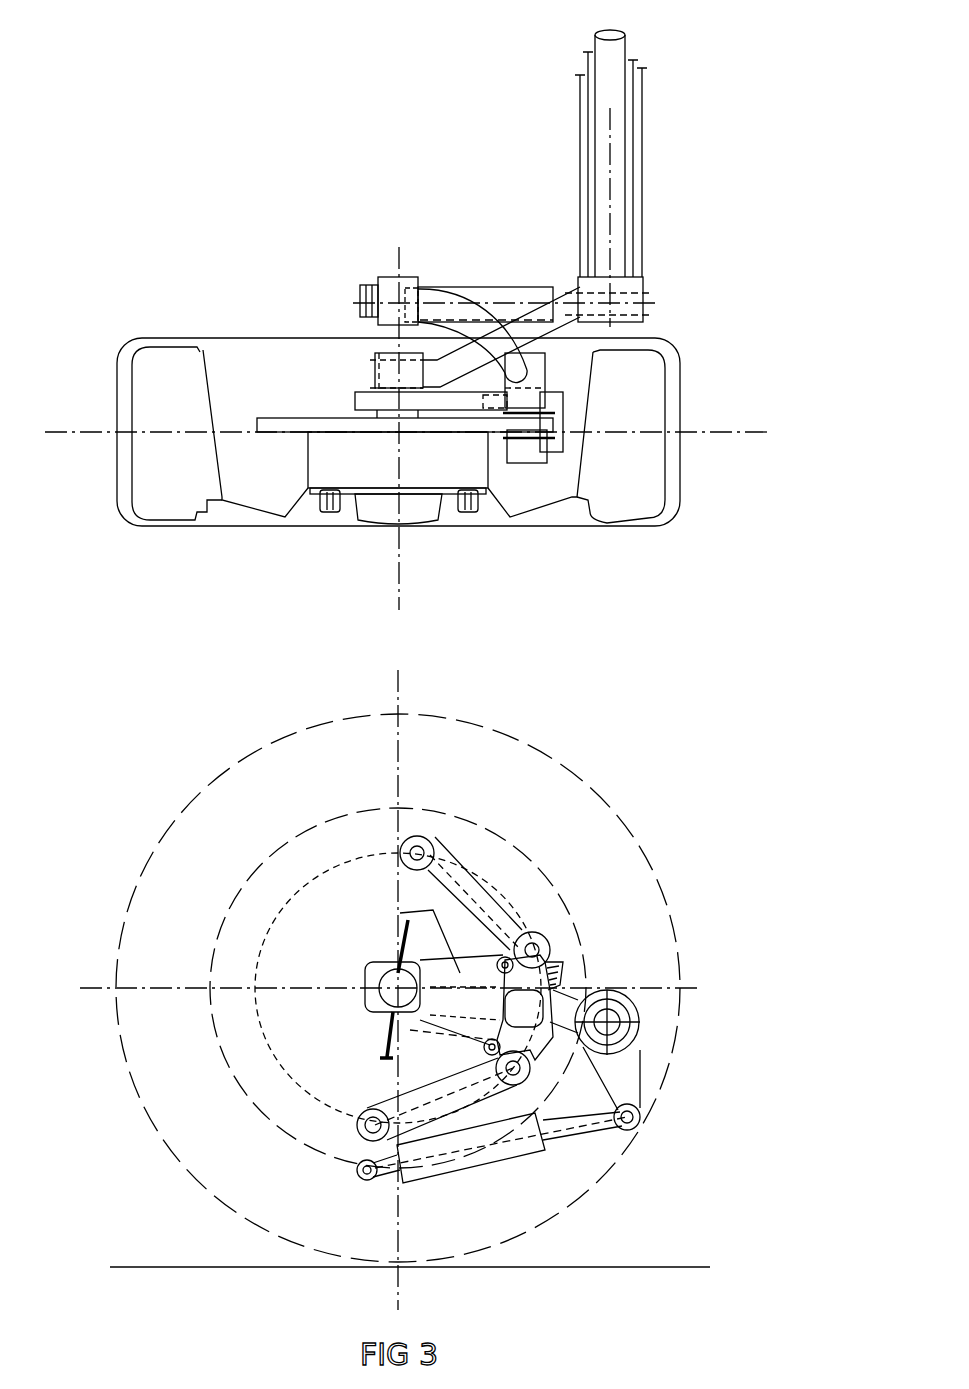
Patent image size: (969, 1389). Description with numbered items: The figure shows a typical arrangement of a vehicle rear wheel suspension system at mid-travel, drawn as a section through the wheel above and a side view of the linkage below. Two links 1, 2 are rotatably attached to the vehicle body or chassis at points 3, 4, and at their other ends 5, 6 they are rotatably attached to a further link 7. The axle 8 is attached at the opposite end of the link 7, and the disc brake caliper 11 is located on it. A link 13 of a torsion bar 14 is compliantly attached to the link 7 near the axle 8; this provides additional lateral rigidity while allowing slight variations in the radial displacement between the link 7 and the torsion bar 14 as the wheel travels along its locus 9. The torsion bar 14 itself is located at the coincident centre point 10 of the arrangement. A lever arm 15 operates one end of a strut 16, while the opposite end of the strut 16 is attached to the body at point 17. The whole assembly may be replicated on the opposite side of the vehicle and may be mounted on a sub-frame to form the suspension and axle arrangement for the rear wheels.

The link 1 is at (450, 287).
The link 2 is at (430, 1088).
The attachment point 3 is at (407, 840).
The attachment point 4 is at (358, 1125).
The attachment end 5 is at (547, 940).
The attachment end 6 is at (530, 1080).
The link 7 is at (360, 393).
The axle 8 is at (377, 983).
The locus 9 is at (410, 1035).
The coincident centre point 10 is at (573, 1020).
The disc brake caliper 11 is at (557, 452).
The link 13 is at (533, 330).
The torsion bar 14 is at (595, 42).
The lever arm 15 is at (640, 1072).
The strut 16 is at (483, 287).
The body attachment point 17 is at (360, 1170).